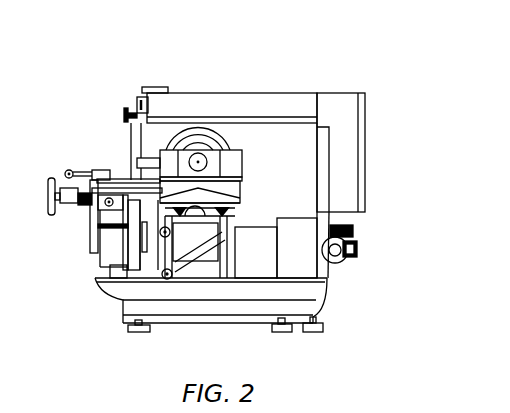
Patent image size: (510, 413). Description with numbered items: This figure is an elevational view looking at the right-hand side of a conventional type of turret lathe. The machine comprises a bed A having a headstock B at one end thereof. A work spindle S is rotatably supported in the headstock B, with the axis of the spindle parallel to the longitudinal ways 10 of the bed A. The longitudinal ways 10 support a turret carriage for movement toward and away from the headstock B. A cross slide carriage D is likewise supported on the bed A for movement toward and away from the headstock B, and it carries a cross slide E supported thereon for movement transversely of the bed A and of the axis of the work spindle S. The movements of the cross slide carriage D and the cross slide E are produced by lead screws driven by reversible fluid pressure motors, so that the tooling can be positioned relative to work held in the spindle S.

The bed A is at (144, 291).
The headstock B is at (266, 103).
The cross slide carriage D is at (126, 223).
The cross slide E is at (124, 170).
The work spindle S is at (198, 132).
The longitudinal ways 10 is at (168, 206).